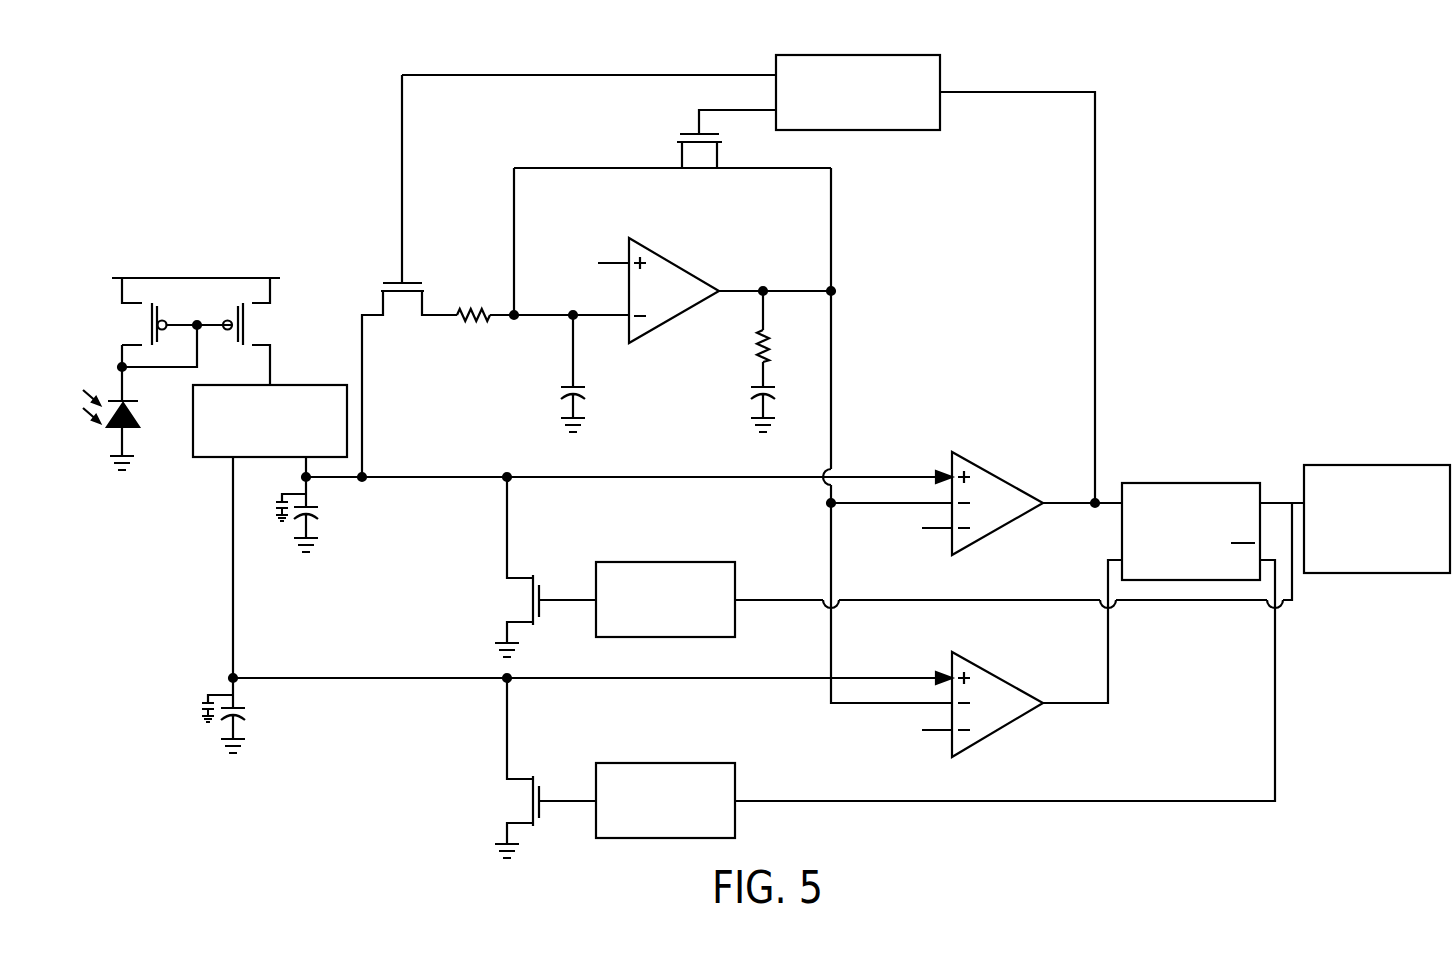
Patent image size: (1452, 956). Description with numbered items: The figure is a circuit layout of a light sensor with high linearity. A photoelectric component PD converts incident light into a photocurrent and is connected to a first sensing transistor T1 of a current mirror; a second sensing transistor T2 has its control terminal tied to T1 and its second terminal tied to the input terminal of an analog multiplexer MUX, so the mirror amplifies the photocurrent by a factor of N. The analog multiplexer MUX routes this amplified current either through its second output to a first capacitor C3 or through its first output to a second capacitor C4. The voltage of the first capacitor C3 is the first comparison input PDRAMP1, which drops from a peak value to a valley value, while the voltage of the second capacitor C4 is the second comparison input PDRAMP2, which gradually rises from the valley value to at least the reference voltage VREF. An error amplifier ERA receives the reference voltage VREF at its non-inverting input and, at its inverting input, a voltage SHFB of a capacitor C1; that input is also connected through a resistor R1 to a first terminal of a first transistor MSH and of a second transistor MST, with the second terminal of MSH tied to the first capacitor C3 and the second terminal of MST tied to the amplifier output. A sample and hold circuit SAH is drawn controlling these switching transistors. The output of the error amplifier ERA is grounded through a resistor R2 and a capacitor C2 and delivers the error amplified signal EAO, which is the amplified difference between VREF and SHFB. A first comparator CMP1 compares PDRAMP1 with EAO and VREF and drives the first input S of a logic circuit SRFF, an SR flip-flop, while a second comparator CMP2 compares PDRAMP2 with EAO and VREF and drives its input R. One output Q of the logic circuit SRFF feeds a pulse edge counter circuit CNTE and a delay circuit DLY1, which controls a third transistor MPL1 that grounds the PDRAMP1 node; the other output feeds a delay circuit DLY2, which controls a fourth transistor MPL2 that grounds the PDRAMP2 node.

The first sensing transistor T1 is at (183, 324).
The second sensing transistor T2 is at (263, 331).
The photoelectric component PD is at (130, 418).
The analog multiplexer MUX is at (193, 430).
The first transistor MSH is at (567, 278).
The second transistor MST is at (672, 212).
The resistor R1 is at (473, 299).
The resistor R2 is at (783, 327).
The capacitor C1 is at (590, 373).
The capacitor C2 is at (780, 397).
The first capacitor C3 is at (314, 504).
The second capacitor C4 is at (241, 605).
The voltage of the capacitor C1 SHFB is at (559, 301).
The reference voltage VREF is at (739, 496).
The error amplified signal EAO is at (777, 275).
The error amplifier ERA is at (680, 263).
The sample and hold circuit SAH is at (940, 74).
The first comparison input PDRAMP1 is at (629, 491).
The second comparison input PDRAMP2 is at (592, 692).
The third transistor MPL1 is at (514, 567).
The fourth transistor MPL2 is at (514, 768).
The delay circuit DLY1 is at (665, 562).
The delay circuit DLY2 is at (665, 763).
The first comparator CMP1 is at (1000, 475).
The second comparator CMP2 is at (1000, 675).
The logic circuit SRFF is at (1190, 483).
The pulse edge counter circuit CNTE is at (1378, 465).